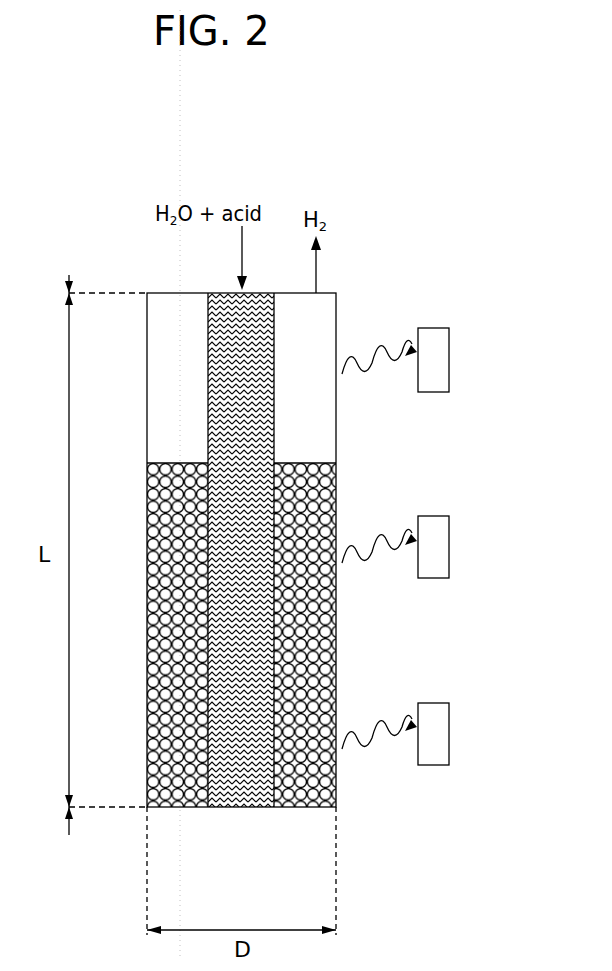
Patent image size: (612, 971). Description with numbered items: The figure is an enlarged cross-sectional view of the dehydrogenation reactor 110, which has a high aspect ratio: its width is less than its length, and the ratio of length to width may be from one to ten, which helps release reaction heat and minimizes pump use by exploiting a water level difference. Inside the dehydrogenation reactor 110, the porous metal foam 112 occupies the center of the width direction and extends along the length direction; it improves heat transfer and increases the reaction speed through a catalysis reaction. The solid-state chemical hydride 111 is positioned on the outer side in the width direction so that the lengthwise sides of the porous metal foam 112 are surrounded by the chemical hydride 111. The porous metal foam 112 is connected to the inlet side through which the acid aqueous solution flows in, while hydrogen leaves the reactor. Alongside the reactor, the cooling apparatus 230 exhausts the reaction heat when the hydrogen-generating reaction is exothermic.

The dehydrogenation reactor 110 is at (171, 156).
The chemical hydride 111 is at (147, 571).
The porous metal foam 112 is at (148, 626).
The cooling apparatus 230 is at (427, 318).